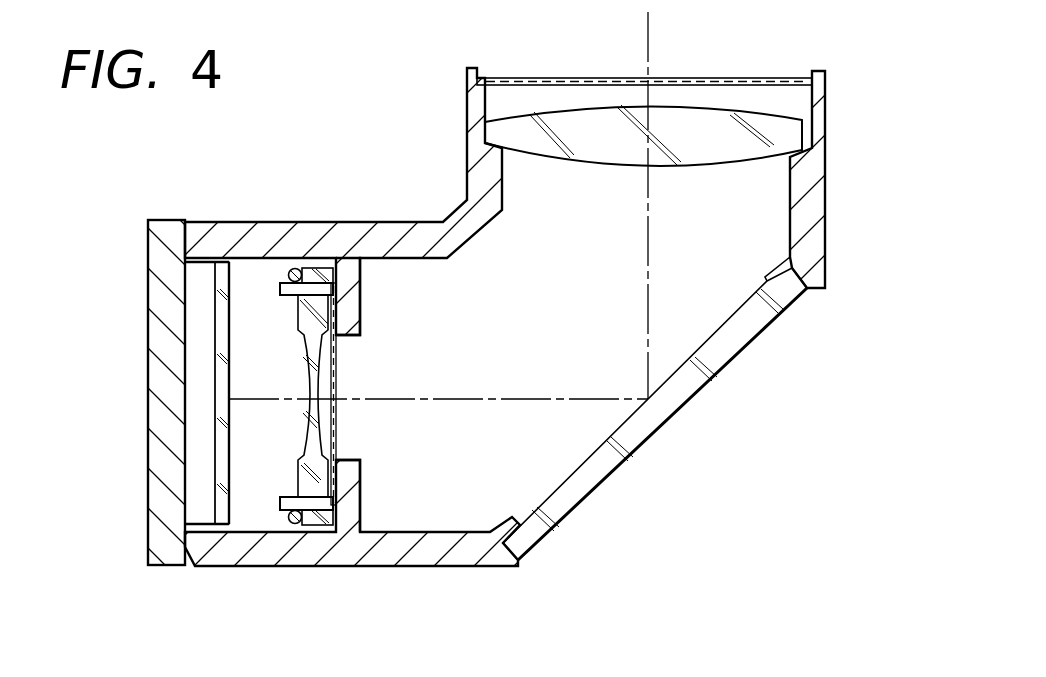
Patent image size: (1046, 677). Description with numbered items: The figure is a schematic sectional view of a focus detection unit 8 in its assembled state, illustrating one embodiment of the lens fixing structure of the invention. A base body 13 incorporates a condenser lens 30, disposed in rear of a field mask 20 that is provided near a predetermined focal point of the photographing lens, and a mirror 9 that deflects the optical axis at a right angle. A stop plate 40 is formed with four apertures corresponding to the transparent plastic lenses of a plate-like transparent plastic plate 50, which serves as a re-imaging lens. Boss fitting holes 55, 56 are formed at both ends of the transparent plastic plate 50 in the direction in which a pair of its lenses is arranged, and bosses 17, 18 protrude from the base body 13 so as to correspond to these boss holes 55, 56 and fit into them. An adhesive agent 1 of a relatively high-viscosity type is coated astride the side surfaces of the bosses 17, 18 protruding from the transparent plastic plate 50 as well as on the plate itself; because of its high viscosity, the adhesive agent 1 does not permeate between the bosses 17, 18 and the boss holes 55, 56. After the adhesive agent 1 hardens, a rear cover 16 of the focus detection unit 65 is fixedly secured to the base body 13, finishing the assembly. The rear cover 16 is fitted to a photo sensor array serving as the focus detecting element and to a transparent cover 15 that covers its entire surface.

The adhesive agent 1 is at (294, 281).
The focus detection unit 8 is at (428, 108).
The mirror 9 is at (695, 376).
The base body 13 is at (480, 562).
The transparent cover 15 is at (222, 262).
The rear cover 16 is at (160, 237).
The boss 17 is at (283, 280).
The boss 18 is at (273, 510).
The field mask 20 is at (503, 78).
The condenser lens 30 is at (708, 118).
The stop plate 40 is at (342, 263).
The transparent plastic plate 50 is at (318, 270).
The boss fitting hole 55 is at (292, 283).
The boss fitting hole 56 is at (317, 512).
The focus detection unit 65 is at (202, 512).